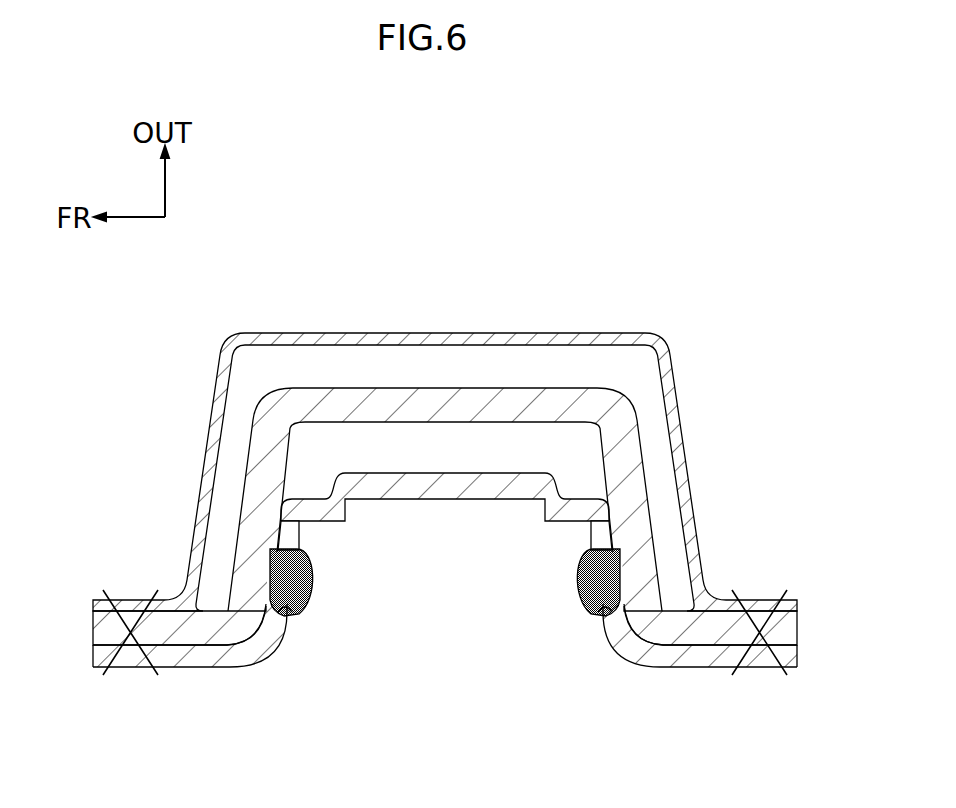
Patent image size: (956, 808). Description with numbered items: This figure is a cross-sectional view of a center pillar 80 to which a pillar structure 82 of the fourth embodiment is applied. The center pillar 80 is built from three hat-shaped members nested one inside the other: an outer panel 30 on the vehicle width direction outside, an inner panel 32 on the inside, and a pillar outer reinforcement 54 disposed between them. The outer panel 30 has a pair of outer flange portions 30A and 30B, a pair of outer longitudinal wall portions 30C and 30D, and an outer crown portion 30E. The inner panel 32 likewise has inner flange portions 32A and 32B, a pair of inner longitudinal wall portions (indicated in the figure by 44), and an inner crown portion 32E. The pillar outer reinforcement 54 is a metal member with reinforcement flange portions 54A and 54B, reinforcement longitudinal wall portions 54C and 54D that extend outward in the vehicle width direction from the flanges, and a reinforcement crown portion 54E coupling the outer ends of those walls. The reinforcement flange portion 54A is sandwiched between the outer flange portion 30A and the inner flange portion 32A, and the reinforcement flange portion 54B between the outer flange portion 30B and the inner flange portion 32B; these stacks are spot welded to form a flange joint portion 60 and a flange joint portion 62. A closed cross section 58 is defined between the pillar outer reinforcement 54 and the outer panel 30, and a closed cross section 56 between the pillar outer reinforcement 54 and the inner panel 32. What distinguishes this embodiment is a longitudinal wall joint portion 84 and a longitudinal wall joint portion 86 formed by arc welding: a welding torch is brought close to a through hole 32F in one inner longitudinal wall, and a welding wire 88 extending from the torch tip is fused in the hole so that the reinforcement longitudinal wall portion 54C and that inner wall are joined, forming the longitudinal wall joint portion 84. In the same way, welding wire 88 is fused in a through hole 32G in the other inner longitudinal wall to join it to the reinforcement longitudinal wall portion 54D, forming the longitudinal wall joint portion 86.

The outer panel 30 is at (463, 332).
The outer flange portion 30A is at (133, 600).
The outer flange portion 30B is at (753, 600).
The outer longitudinal wall portion 30C is at (218, 388).
The outer longitudinal wall portion 30D is at (678, 388).
The outer crown portion 30E is at (300, 333).
The inner panel 32 is at (440, 500).
The inner flange portion 32A is at (200, 668).
The inner flange portion 32B is at (678, 668).
The inner crown portion 32E is at (520, 473).
The through hole 32F is at (288, 618).
The through hole 32G is at (602, 618).
The engaging portion 44 is at (299, 530).
The pillar outer reinforcement 54 is at (391, 387).
The reinforcement flange portion 54A is at (215, 611).
The reinforcement flange portion 54B is at (675, 611).
The reinforcement longitudinal wall portion 54C is at (250, 461).
The reinforcement longitudinal wall portion 54D is at (636, 461).
The reinforcement crown portion 54E is at (347, 388).
The closed cross section 56 is at (430, 459).
The closed cross section 58 is at (430, 378).
The flange joint portion 60 is at (128, 647).
The flange joint portion 62 is at (758, 647).
The center pillar 80 is at (602, 228).
The pillar structure 82 is at (527, 305).
The longitudinal wall joint portion 84 is at (313, 601).
The longitudinal wall joint portion 86 is at (577, 601).
The welding wire 88 is at (313, 583).